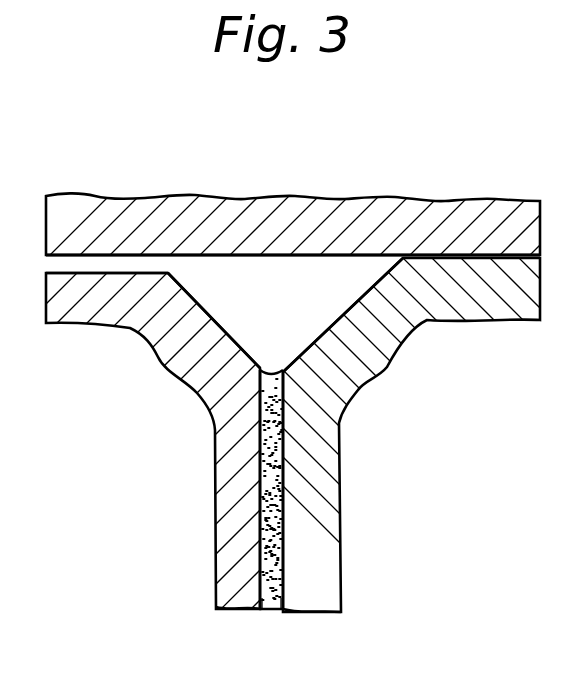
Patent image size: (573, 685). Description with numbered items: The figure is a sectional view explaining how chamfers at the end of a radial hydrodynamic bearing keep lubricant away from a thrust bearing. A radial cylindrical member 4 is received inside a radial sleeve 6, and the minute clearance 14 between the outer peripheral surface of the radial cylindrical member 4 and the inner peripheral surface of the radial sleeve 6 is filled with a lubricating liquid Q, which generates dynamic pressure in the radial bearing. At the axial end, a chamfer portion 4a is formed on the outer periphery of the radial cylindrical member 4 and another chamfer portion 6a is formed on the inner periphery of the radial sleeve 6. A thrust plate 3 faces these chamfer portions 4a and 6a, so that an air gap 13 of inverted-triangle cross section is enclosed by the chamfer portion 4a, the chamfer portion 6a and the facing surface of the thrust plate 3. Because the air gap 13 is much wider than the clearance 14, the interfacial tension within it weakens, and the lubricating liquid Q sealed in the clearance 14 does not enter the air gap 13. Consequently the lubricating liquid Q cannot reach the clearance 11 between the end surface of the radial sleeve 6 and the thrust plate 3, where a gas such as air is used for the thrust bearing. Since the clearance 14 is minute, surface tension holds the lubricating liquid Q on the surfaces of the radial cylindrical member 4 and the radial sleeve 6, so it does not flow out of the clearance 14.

The thrust plate 3 is at (333, 223).
The radial cylindrical member 4 is at (372, 357).
The chamfer portion 4a is at (332, 328).
The radial sleeve 6 is at (158, 360).
The chamfer portion 6a is at (218, 323).
The clearance 11 is at (68, 262).
The air gap 13 is at (217, 263).
The clearance 14 is at (263, 483).
The lubricating liquid Q is at (270, 611).